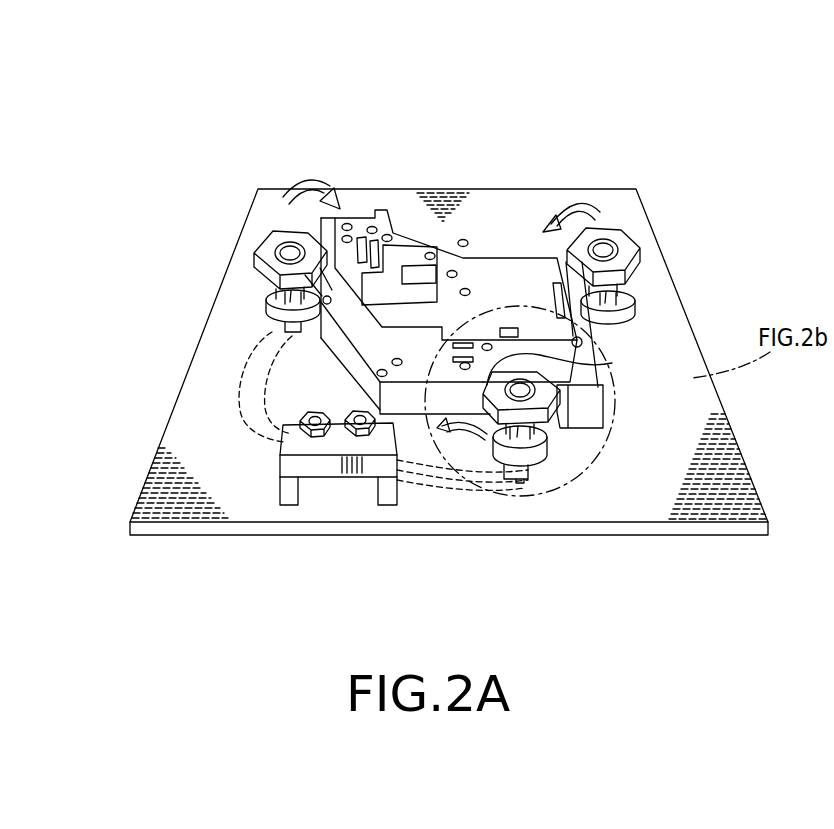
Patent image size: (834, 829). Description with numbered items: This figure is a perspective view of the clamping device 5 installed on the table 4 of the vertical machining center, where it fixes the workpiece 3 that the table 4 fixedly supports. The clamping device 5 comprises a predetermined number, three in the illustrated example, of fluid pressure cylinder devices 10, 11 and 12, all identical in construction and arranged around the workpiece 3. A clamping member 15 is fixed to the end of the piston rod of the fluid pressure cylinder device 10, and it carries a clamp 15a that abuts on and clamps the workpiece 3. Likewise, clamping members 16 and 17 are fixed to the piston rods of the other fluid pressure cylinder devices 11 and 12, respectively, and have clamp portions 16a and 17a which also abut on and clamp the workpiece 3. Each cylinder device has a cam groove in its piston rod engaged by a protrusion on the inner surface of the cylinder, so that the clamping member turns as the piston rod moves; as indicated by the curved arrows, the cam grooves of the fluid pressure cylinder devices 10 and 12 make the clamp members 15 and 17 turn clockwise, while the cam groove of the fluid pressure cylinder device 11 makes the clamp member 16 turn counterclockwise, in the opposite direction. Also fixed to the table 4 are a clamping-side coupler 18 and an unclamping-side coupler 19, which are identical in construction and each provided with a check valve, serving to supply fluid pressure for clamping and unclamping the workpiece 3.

The workpiece 3 is at (480, 245).
The table 4 is at (328, 507).
The clamping device 5 is at (248, 237).
The fluid pressure cylinder device 10 is at (537, 457).
The fluid pressure cylinder device 11 is at (634, 303).
The fluid pressure cylinder device 12 is at (266, 300).
The clamping member 15 is at (532, 402).
The clamp 15a is at (612, 363).
The clamping member 16 is at (624, 245).
The clamp portion 16a is at (593, 212).
The clamping member 17 is at (283, 238).
The clamp portion 17a is at (336, 219).
The clamping-side coupler 18 is at (307, 416).
The unclamping-side coupler 19 is at (363, 418).